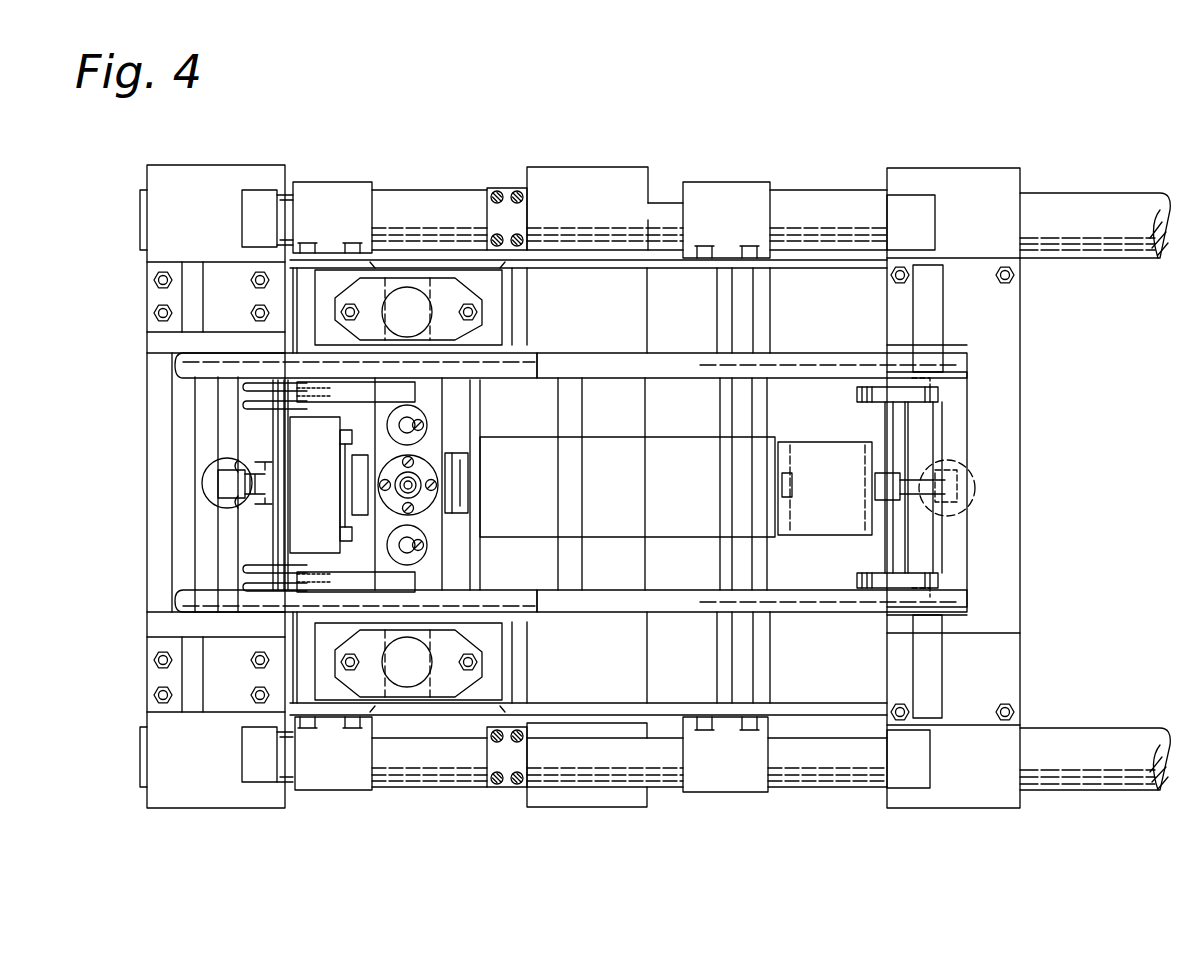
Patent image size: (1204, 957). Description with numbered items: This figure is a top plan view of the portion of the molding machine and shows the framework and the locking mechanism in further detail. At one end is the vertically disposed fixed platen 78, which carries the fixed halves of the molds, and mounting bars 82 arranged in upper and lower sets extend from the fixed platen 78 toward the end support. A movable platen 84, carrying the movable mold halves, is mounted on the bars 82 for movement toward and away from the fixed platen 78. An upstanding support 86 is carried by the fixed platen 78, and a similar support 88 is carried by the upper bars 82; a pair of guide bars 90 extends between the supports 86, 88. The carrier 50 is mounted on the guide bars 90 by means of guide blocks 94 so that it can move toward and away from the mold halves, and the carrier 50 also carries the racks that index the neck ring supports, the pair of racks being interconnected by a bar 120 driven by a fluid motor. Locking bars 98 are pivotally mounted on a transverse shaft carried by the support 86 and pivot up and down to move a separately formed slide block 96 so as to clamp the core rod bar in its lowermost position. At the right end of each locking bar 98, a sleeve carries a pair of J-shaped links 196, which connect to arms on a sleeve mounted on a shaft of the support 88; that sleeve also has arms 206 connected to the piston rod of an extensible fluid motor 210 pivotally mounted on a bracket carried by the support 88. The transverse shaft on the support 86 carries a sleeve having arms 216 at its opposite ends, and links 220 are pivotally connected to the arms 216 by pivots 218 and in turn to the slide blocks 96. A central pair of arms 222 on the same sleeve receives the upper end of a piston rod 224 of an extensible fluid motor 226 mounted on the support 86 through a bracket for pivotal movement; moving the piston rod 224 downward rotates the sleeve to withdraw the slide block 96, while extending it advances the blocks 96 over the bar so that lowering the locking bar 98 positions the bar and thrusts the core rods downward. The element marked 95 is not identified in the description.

The carrier 50 is at (700, 128).
The fixed platen 78 is at (158, 295).
The mounting bars 82 is at (1075, 205).
The movable platen 84 is at (585, 178).
The upstanding support 86 is at (208, 553).
The support 88 is at (1010, 487).
The guide bars 90 is at (815, 213).
The guide blocks 94 is at (335, 192).
The gear box 95 is at (360, 483).
The slide block 96 is at (543, 342).
The locking bars 98 is at (597, 368).
The bar 120 is at (483, 490).
The J-shaped links 196 is at (863, 390).
The arms 206 is at (960, 482).
The extensible fluid motor 210 is at (965, 495).
The arms 216 is at (257, 387).
The pivots 218 is at (288, 428).
The links 220 is at (350, 398).
The arms 222 is at (222, 498).
The piston rod 224 is at (240, 508).
The extensible fluid motor 226 is at (237, 510).